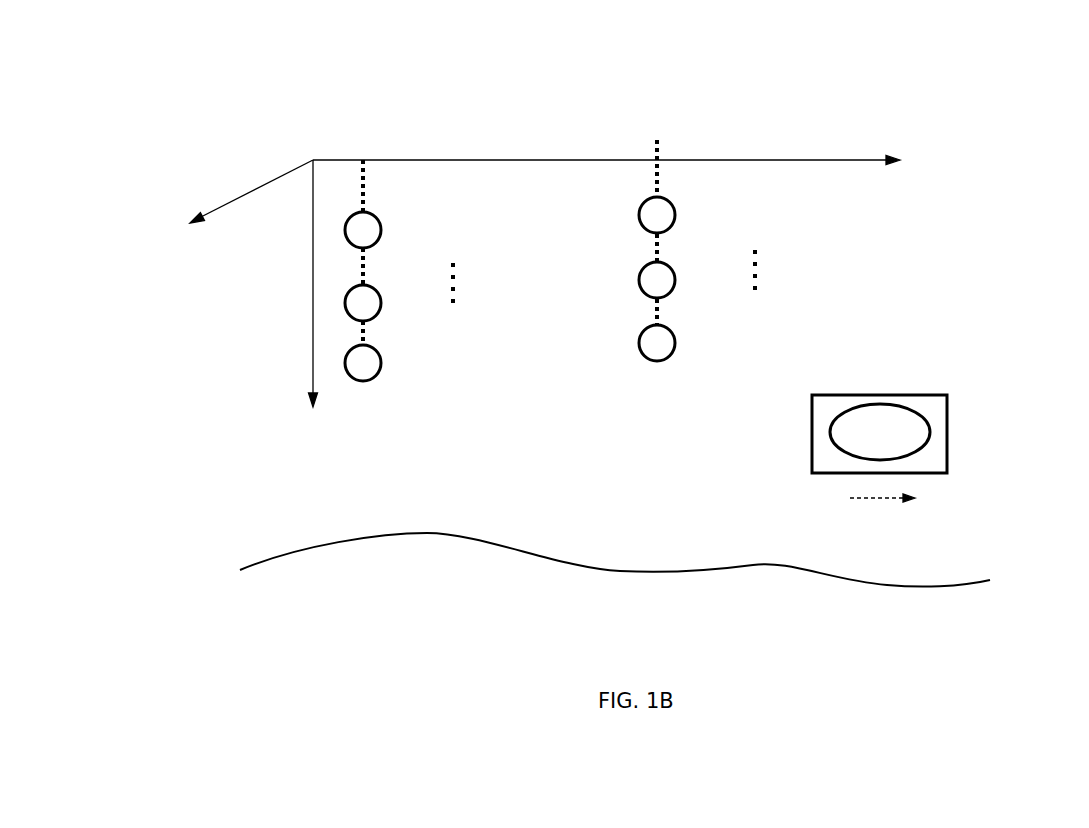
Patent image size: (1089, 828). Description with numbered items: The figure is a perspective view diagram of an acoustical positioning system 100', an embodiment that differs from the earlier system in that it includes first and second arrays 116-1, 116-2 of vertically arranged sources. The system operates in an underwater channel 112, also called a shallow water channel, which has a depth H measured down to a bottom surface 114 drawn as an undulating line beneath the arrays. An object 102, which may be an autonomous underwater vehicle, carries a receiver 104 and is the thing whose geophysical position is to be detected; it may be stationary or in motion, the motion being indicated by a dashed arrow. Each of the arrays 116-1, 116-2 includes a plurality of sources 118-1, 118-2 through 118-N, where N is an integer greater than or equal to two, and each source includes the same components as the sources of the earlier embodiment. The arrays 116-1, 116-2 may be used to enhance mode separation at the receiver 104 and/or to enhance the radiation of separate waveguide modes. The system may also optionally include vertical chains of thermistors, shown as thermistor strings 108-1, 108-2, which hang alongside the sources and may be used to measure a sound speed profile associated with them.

The acoustical positioning system 100' is at (621, 307).
The object 102 is at (947, 433).
The receiver 104 is at (915, 453).
The thermistor string 108-1 is at (368, 183).
The thermistor string 108-2 is at (662, 178).
The underwater channel 112 is at (667, 506).
The bottom surface 114 is at (752, 565).
The first array 116-1 is at (417, 320).
The second array 116-2 is at (703, 292).
The source 118-N is at (381, 230).
The source 118-2 is at (381, 305).
The source 118-1 is at (381, 365).